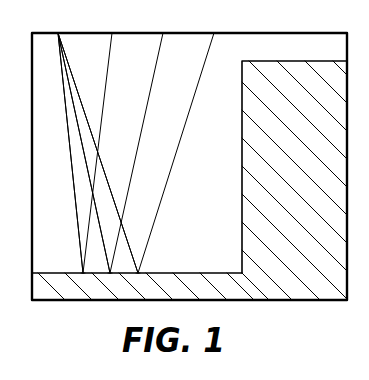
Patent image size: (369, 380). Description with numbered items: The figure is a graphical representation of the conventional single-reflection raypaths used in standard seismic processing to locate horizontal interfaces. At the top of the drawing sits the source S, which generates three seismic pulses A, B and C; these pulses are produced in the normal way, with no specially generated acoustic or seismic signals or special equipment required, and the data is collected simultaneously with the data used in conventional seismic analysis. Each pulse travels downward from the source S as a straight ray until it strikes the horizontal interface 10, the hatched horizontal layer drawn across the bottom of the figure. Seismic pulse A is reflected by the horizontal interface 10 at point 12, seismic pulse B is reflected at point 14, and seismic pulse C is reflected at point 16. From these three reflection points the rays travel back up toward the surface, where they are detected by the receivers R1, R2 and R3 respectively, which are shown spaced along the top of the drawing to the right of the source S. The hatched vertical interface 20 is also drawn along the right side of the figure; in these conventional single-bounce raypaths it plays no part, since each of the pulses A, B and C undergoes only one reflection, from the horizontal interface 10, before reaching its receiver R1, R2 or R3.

The horizontal interface 10 is at (187, 272).
The reflection point 12 is at (83, 273).
The reflection point 14 is at (110, 273).
The reflection point 16 is at (138, 273).
The vertical interface 20 is at (242, 155).
The source S is at (95, 144).
The seismic pulse A is at (65, 115).
The seismic pulse B is at (77, 124).
The seismic pulse C is at (88, 134).
The receiver R1 is at (101, 144).
The receiver R2 is at (140, 144).
The receiver R3 is at (181, 144).